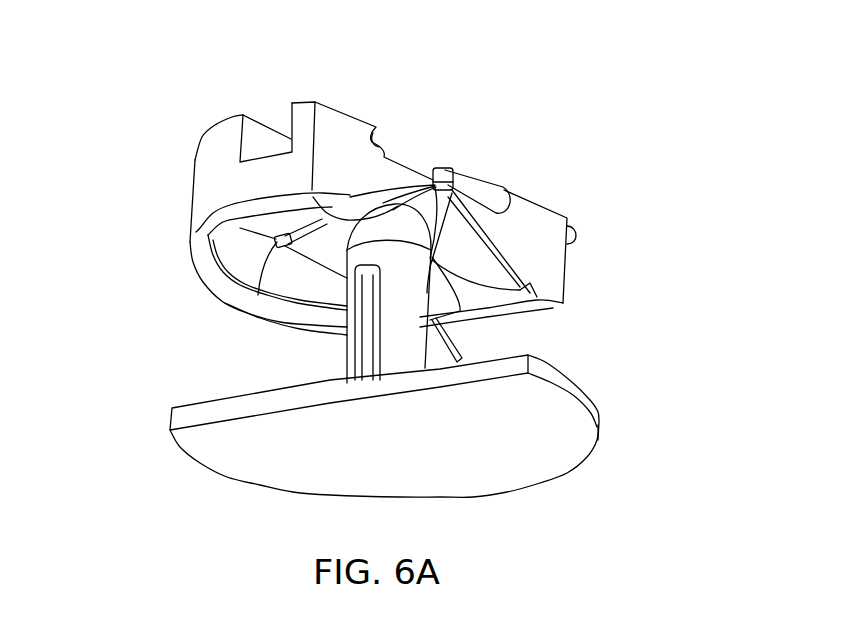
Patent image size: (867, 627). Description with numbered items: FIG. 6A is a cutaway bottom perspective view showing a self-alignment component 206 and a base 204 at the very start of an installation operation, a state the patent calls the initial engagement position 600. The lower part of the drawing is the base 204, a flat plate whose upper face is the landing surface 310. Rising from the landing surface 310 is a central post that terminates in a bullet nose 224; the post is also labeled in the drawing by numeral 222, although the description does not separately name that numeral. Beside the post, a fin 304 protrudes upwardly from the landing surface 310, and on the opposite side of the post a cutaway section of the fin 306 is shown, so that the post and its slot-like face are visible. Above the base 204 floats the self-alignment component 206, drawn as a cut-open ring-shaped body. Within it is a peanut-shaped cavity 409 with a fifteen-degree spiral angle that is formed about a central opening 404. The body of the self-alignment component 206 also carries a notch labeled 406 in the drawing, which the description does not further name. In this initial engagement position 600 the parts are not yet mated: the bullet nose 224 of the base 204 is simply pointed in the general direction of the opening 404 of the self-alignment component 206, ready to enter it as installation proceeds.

The initial engagement position 600 is at (618, 86).
The self-alignment component 206 is at (194, 183).
The notch 406 is at (279, 122).
The central opening 404 is at (408, 159).
The bullet nose 224 is at (458, 230).
The peanut-shaped cavity 409 is at (282, 275).
The landing surface 310 is at (243, 398).
The cutaway section of the fin 306 is at (352, 334).
The post 222 is at (390, 347).
The fin 304 is at (443, 353).
The base 204 is at (170, 412).